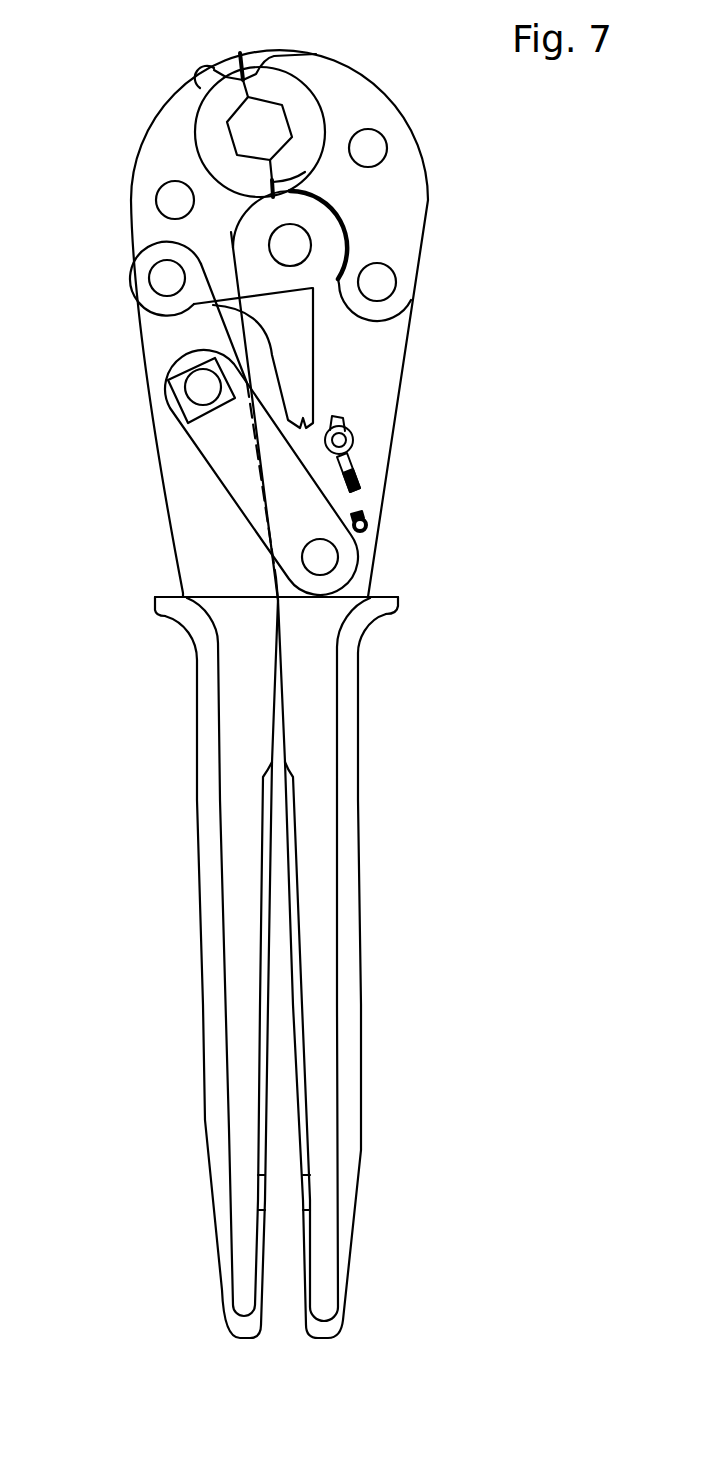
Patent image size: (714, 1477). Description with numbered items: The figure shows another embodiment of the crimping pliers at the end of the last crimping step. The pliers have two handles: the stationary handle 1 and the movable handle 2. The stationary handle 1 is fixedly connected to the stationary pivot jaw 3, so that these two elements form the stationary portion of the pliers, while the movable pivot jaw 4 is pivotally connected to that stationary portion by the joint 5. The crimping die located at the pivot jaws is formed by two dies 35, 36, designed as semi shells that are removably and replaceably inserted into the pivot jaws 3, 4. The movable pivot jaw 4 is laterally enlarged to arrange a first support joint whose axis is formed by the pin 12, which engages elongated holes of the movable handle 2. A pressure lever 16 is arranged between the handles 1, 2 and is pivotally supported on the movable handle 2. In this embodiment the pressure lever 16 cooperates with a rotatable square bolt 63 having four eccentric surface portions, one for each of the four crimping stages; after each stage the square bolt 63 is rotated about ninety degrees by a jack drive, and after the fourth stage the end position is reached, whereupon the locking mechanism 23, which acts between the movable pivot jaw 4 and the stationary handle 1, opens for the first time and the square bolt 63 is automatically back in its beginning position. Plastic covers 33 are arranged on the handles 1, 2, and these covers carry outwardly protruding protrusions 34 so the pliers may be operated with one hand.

The stationary handle 1 is at (386, 1011).
The movable handle 2 is at (174, 1010).
The stationary pivot jaw 3 is at (345, 90).
The movable pivot jaw 4 is at (163, 128).
The joint 5 is at (300, 243).
The pin 12 is at (157, 277).
The pressure lever 16 is at (181, 453).
The locking mechanism 23 is at (363, 401).
The plastic covers 33 is at (237, 790).
The protrusions 34 is at (168, 603).
The die 35 is at (309, 64).
The die 36 is at (194, 79).
The square bolt 63 is at (157, 396).